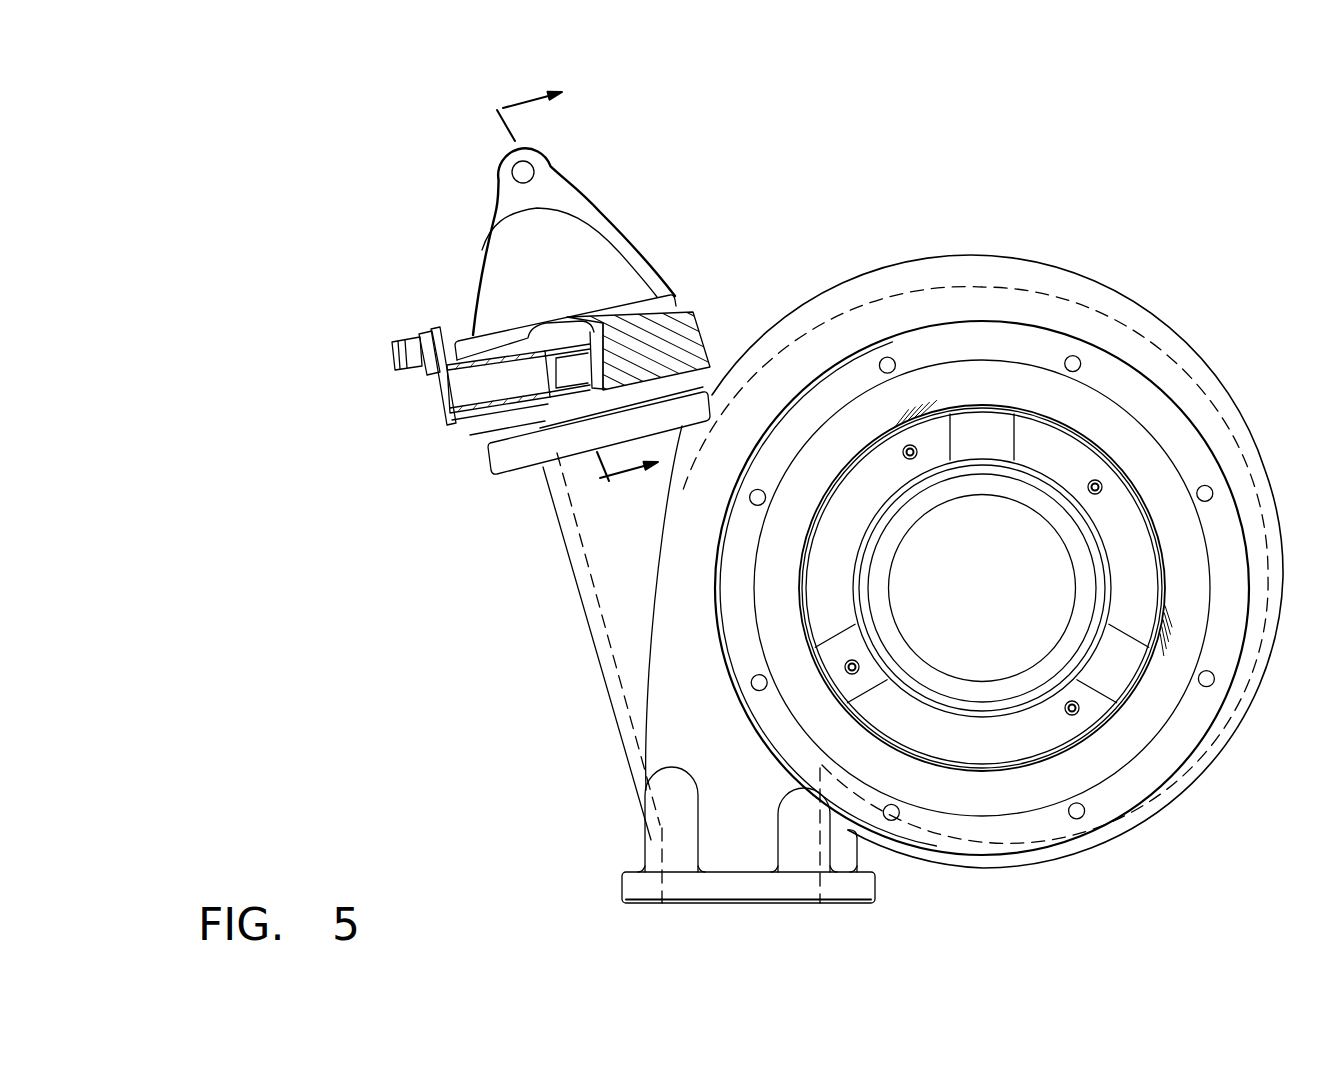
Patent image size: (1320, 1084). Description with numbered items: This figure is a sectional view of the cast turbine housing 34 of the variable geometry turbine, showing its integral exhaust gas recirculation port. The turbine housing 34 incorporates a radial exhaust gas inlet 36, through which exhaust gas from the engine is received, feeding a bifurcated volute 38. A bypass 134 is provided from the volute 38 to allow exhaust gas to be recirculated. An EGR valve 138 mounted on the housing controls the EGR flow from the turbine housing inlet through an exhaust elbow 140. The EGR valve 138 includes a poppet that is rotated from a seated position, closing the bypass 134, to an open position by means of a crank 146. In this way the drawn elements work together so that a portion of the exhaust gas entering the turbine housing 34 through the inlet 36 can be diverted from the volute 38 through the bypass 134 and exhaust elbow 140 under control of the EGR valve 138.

The turbine housing 34 is at (1055, 277).
The radial exhaust gas inlet 36 is at (840, 905).
The bifurcated volute 38 is at (700, 712).
The bypass 134 is at (602, 525).
The EGR valve 138 is at (412, 438).
The exhaust elbow 140 is at (577, 253).
The crank 146 is at (430, 330).